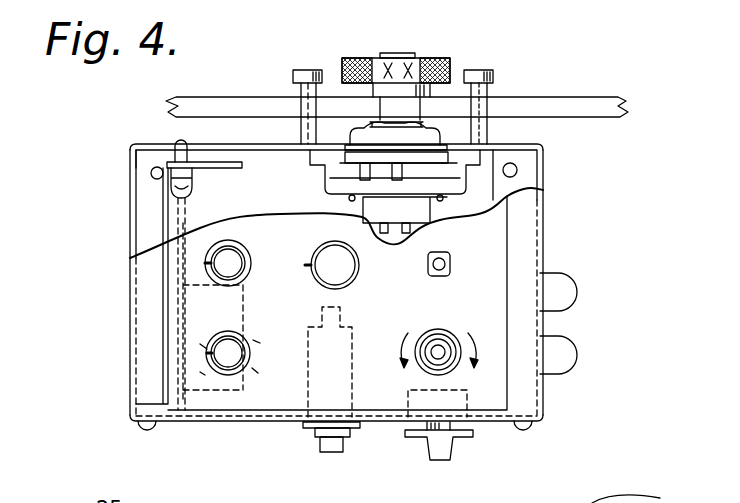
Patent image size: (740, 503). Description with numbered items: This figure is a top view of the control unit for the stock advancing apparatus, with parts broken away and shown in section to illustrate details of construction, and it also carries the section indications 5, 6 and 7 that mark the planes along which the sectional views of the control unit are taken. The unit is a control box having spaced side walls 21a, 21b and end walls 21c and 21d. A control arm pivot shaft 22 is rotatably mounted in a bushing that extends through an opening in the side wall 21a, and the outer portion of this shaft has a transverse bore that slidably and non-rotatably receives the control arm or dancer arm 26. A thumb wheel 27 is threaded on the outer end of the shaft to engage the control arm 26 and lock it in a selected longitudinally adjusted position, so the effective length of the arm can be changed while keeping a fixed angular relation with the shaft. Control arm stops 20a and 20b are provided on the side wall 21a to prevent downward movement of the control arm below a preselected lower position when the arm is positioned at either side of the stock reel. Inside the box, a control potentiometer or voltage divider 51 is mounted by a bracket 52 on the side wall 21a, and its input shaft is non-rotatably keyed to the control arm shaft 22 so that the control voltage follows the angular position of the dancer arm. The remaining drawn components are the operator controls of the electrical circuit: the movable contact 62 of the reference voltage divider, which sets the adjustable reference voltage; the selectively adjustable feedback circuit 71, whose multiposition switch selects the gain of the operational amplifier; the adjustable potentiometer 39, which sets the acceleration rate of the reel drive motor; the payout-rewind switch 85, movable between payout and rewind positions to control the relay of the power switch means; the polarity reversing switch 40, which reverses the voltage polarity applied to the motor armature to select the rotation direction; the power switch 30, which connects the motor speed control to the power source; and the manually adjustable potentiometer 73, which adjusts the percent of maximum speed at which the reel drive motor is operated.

The control arm 26 is at (567, 97).
The thumb wheel 27 is at (402, 107).
The control arm stop 20a is at (484, 90).
The control arm stop 20b is at (293, 88).
The control arm pivot shaft 22 is at (488, 71).
The side wall 21a is at (496, 146).
The side wall 21b is at (286, 424).
The end wall 21c is at (544, 170).
The end wall 21d is at (130, 228).
The bracket 52 is at (460, 170).
The control potentiometer 51 is at (418, 212).
The movable contact 62 is at (230, 266).
The selectively adjustable feedback circuit 71 is at (230, 358).
The adjustable potentiometer 39 is at (346, 270).
The payout-rewind switch 85 is at (440, 277).
The polarity reversing switch 40 is at (446, 358).
The power switch 30 is at (343, 403).
The manually adjustable potentiometer 73 is at (452, 421).
The section line 5- 5 is at (353, 30).
The section line 6- 6 is at (291, 158).
The section line 7- 7 is at (291, 225).